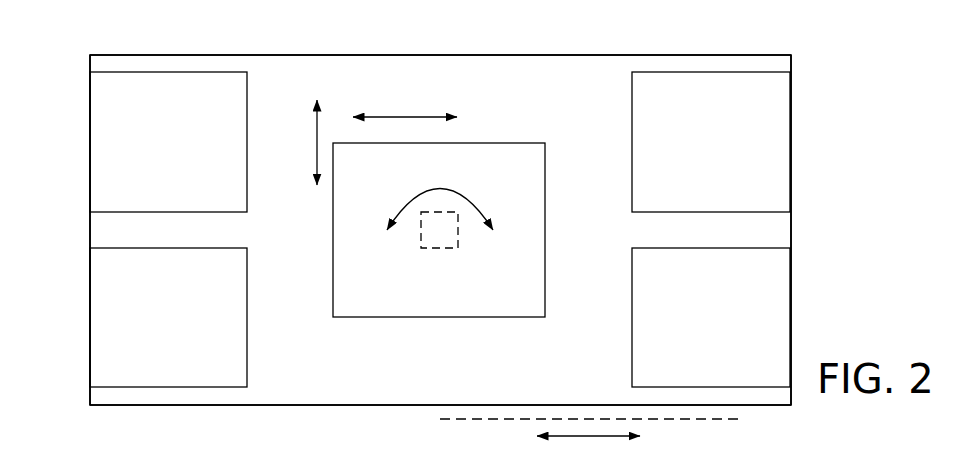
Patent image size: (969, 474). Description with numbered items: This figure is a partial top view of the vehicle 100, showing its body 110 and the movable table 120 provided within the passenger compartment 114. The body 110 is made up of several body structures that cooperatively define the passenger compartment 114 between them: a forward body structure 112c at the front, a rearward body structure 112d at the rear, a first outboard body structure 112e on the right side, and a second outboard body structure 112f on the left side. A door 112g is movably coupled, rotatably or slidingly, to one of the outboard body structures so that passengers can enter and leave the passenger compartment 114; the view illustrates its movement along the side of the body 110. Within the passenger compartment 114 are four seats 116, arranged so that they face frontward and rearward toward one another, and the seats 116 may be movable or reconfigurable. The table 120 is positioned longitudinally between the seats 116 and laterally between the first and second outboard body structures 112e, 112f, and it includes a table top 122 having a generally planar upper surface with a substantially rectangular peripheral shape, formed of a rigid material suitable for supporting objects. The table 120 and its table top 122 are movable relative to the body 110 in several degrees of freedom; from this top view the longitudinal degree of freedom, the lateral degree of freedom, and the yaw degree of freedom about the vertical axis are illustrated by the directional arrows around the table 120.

The vehicle 100 is at (475, 240).
The body 110 is at (667, 55).
The forward body structure 112c is at (790, 227).
The rearward body structure 112d is at (90, 224).
The first outboard body structure 112e is at (272, 405).
The second outboard body structure 112f is at (343, 55).
The door 112g is at (517, 420).
The passenger compartment 114 is at (465, 87).
The seats 116 is at (440, 229).
The table 120 is at (493, 115).
The table top 122 is at (508, 235).